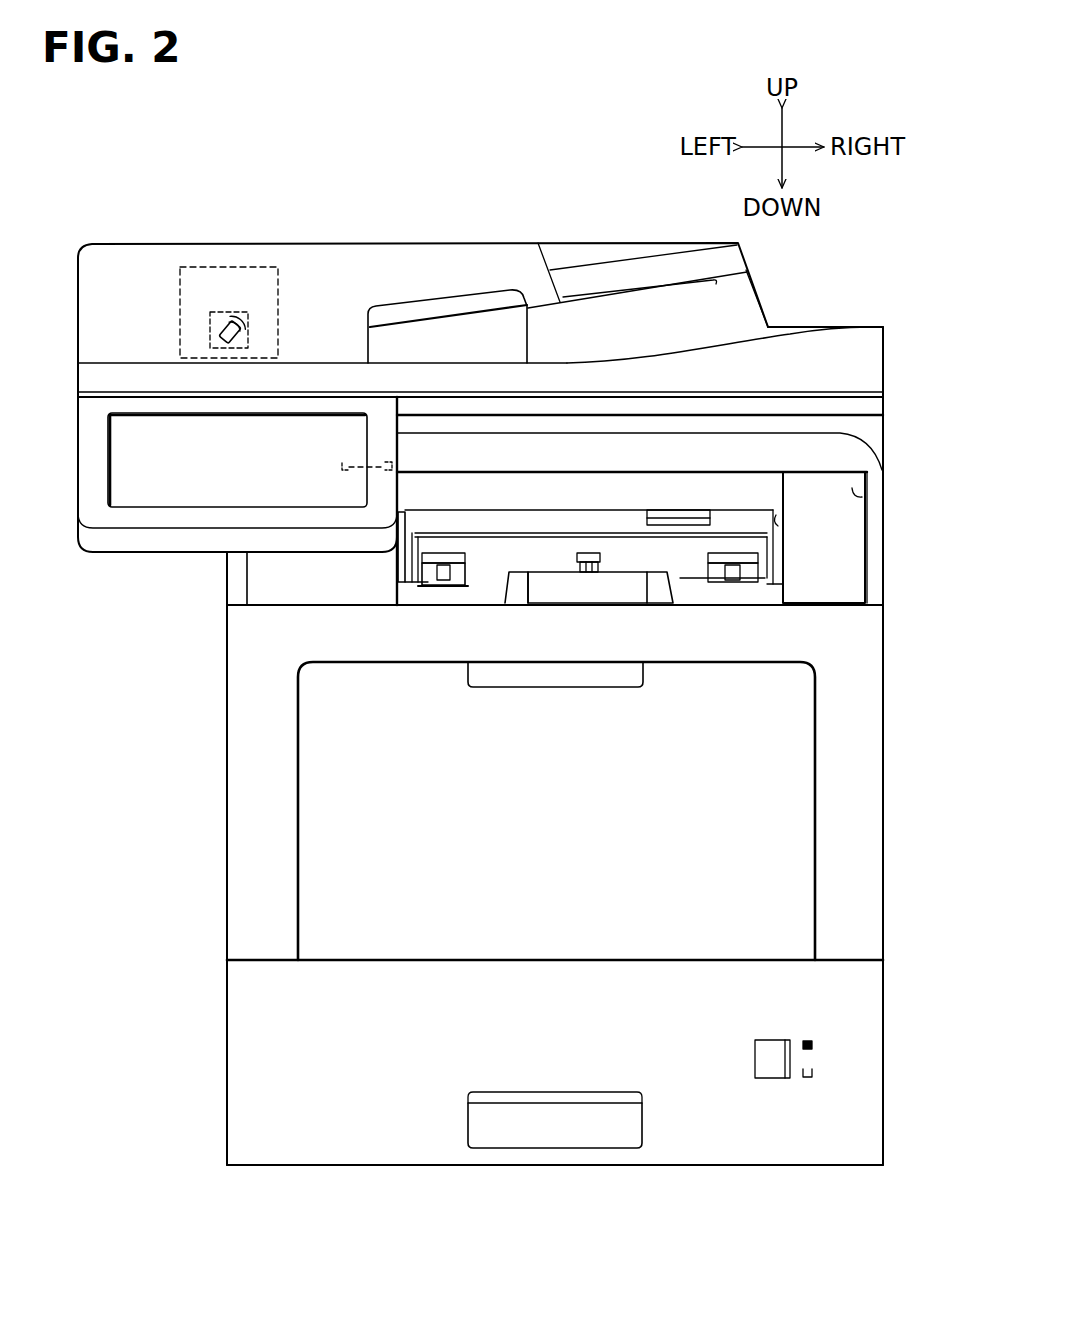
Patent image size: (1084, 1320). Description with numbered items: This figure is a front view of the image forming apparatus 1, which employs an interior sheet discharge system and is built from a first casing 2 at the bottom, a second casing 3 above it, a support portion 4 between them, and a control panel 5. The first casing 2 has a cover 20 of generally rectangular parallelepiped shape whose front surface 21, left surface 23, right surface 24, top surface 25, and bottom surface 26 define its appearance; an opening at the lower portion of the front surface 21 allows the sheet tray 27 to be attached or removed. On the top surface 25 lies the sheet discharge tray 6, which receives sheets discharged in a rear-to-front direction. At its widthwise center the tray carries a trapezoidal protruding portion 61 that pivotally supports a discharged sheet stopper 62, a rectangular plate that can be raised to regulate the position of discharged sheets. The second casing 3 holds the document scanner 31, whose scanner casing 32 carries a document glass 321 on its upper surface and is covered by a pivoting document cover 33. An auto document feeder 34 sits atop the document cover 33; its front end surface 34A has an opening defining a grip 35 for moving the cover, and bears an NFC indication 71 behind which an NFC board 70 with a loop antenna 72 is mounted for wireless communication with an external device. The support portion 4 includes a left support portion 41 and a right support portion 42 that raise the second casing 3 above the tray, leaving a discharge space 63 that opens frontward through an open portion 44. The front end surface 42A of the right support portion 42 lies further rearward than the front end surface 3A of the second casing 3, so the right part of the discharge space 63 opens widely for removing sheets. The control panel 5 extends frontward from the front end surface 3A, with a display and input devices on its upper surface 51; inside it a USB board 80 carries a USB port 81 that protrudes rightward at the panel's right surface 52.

The image forming apparatus 1 is at (125, 175).
The first casing 2 is at (210, 765).
The second casing 3 is at (140, 240).
The front end surface 3A is at (805, 365).
The support portion 4 is at (888, 546).
The control panel 5 is at (108, 565).
The sheet discharge tray 6 is at (690, 600).
The cover 20 is at (230, 801).
The front surface 21 is at (240, 855).
The left surface 23 is at (228, 716).
The right surface 24 is at (885, 716).
The top surface 25 is at (322, 602).
The bottom surface 26 is at (805, 1168).
The sheet tray 27 is at (355, 1165).
The document scanner 31 is at (890, 326).
The scanner casing 32 is at (885, 430).
The document glass 321 is at (880, 388).
The document cover 33 is at (876, 326).
The auto document feeder 34 is at (197, 243).
The front end surface 34A is at (382, 258).
The grip 35 is at (470, 300).
The left support portion 41 is at (262, 582).
The right support portion 42 is at (888, 562).
The front end surface 42A is at (860, 497).
The open portion 44 is at (775, 520).
The upper surface 51 is at (120, 405).
The right surface 52 is at (400, 490).
The protruding portion 61 is at (516, 572).
The discharged sheet stopper 62 is at (555, 572).
The discharge space 63 is at (478, 565).
The NFC board 70 is at (278, 277).
The NFC indication 71 is at (246, 322).
The loop antenna 72 is at (213, 312).
The USB board 80 is at (342, 465).
The USB port 81 is at (398, 465).